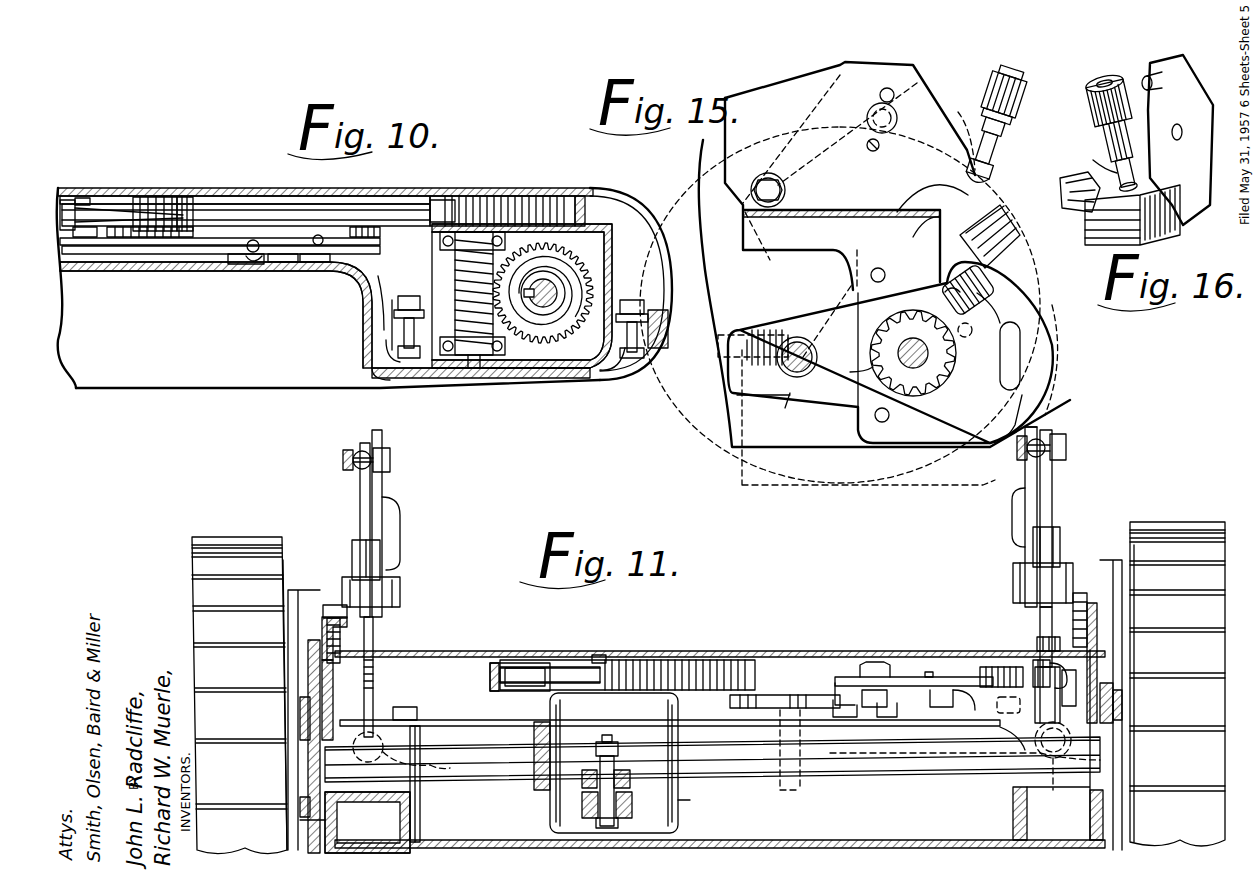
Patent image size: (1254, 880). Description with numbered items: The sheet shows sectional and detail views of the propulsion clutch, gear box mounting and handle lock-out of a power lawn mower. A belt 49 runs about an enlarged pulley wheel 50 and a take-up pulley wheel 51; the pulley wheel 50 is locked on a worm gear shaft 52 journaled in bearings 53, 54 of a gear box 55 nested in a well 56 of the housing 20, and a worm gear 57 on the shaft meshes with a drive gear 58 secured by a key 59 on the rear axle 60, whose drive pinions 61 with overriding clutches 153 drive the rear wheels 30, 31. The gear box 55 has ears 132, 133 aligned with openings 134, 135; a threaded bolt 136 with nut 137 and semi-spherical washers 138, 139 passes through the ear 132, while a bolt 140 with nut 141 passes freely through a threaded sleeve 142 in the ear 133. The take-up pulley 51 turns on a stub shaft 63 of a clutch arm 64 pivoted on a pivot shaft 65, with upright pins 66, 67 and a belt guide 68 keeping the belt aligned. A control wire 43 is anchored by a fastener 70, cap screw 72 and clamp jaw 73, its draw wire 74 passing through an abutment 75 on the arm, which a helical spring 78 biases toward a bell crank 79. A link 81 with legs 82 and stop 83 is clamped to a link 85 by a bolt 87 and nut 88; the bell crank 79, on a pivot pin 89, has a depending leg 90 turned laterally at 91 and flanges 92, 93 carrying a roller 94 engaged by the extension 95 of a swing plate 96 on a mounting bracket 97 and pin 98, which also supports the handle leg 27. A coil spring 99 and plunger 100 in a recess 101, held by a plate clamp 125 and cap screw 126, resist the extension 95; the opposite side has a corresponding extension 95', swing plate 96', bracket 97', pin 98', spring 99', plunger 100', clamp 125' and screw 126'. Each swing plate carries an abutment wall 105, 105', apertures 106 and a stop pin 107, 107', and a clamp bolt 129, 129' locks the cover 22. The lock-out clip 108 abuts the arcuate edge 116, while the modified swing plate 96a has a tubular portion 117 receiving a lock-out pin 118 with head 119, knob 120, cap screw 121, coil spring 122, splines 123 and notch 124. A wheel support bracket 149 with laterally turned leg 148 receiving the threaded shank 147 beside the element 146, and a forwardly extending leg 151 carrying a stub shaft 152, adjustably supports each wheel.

In FIG. 10, the housing 20 is at (376, 378).
In FIG. 15, the housing 20 is at (738, 436).
In FIG. 11, the housing 20 is at (702, 746).
In FIG. 10, the cover 22 is at (400, 190).
In FIG. 11, the cover 22 is at (740, 650).
In FIG. 11, the handle leg 27 is at (1040, 439).
In FIG. 15, the rear wheel 30 is at (1045, 350).
In FIG. 11, the rear wheel 30 is at (236, 537).
In FIG. 11, the rear wheel 31 is at (1168, 522).
In FIG. 10, the control wire 43 is at (255, 242).
In FIG. 10, the belt 49 is at (283, 212).
In FIG. 11, the belt 49 is at (543, 667).
In FIG. 10, the enlarged pulley wheel 50 is at (520, 194).
In FIG. 11, the enlarged pulley wheel 50 is at (570, 660).
In FIG. 10, the take-up pulley wheel 51 is at (112, 205).
In FIG. 10, the worm gear shaft 52 is at (462, 205).
In FIG. 11, the worm gear shaft 52 is at (606, 657).
In FIG. 10, the bearing 53 is at (440, 210).
In FIG. 10, the bearing 54 is at (474, 368).
In FIG. 10, the gear box 55 is at (592, 226).
In FIG. 11, the gear box 55 is at (633, 700).
In FIG. 10, the well 56 is at (584, 372).
In FIG. 11, the well 56 is at (724, 817).
In FIG. 10, the worm gear 57 is at (458, 270).
In FIG. 10, the drive gear 58 is at (582, 255).
In FIG. 10, the key 59 is at (521, 288).
In FIG. 10, the rear axle 60 is at (548, 300).
In FIG. 15, the rear axle 60 is at (910, 340).
In FIG. 11, the rear axle 60 is at (910, 762).
In FIG. 15, the drive pinion 61 is at (873, 367).
In FIG. 10, the stub shaft 63 is at (148, 196).
In FIG. 10, the clutch arm 64 is at (160, 246).
In FIG. 11, the clutch arm 64 is at (796, 695).
In FIG. 10, the pivot shaft 65 is at (360, 227).
In FIG. 11, the pivot shaft 65 is at (775, 738).
In FIG. 10, the upright pin 66 is at (82, 198).
In FIG. 10, the upright pin 67 is at (188, 198).
In FIG. 10, the belt guide 68 is at (592, 200).
In FIG. 11, the belt guide 68 is at (492, 675).
In FIG. 10, the fastener 70 is at (278, 262).
In FIG. 10, the cap screw 72 is at (296, 262).
In FIG. 10, the clamp jaw 73 is at (248, 262).
In FIG. 10, the draw wire 74 is at (252, 240).
In FIG. 10, the abutment 75 is at (216, 258).
In FIG. 11, the abutment 75 is at (852, 714).
In FIG. 10, the helical spring 78 is at (318, 246).
In FIG. 11, the bell crank 79 is at (1037, 652).
In FIG. 11, the link 81 is at (825, 690).
In FIG. 11, the legs 82 is at (896, 677).
In FIG. 11, the stop 83 is at (929, 672).
In FIG. 11, the link 85 is at (952, 677).
In FIG. 11, the bolt 87 is at (874, 662).
In FIG. 11, the nut 88 is at (880, 710).
In FIG. 11, the pivot pin 89 is at (1003, 666).
In FIG. 11, the depending leg 90 is at (968, 707).
In FIG. 11, the laterally turned portion 91 is at (935, 710).
In FIG. 11, the flange 92 is at (1080, 683).
In FIG. 11, the flange 93 is at (1106, 649).
In FIG. 11, the roller 94 is at (1115, 698).
In FIG. 11, the extension 95 is at (1058, 745).
In FIG. 15, the extension 95' is at (753, 312).
In FIG. 11, the swing plate 96 is at (1027, 547).
In FIG. 15, the swing plate 96' is at (832, 182).
In FIG. 11, the swing plate 96' is at (360, 583).
In FIG. 15, the swing plate 96a is at (917, 97).
In FIG. 11, the swing plate mounting bracket 97 is at (1087, 594).
In FIG. 15, the swing plate mounting bracket 97' is at (895, 198).
In FIG. 11, the swing plate mounting bracket 97' is at (319, 611).
In FIG. 11, the pin 98 is at (1020, 569).
In FIG. 15, the pin 98' is at (786, 173).
In FIG. 11, the pin 98' is at (394, 573).
In FIG. 11, the coil spring 99 is at (1112, 773).
In FIG. 15, the coil spring 99' is at (754, 331).
In FIG. 11, the coil spring 99' is at (447, 787).
In FIG. 11, the plunger 100 is at (993, 763).
In FIG. 15, the plunger 100' is at (761, 406).
In FIG. 11, the plunger 100' is at (670, 734).
In FIG. 11, the recess 101 is at (1073, 744).
In FIG. 11, the abutment wall 105 is at (995, 517).
In FIG. 11, the abutment wall 105' is at (422, 533).
In FIG. 15, the apertures 106 is at (880, 146).
In FIG. 15, the stop pin 107 is at (904, 121).
In FIG. 11, the stop pin 107 is at (1064, 448).
In FIG. 11, the stop pin 107' is at (393, 464).
In FIG. 11, the U-shaped clip 108 is at (1050, 545).
In FIG. 15, the arcuate edge 116 is at (942, 228).
In FIG. 16, the arcuate edge 116 is at (1090, 226).
In FIG. 15, the tubular portion 117 is at (996, 170).
In FIG. 16, the tubular portion 117 is at (1127, 135).
In FIG. 15, the lock-out pin 118 is at (1008, 130).
In FIG. 16, the lock-out pin 118 is at (1150, 166).
In FIG. 15, the enlarged head 119 is at (986, 202).
In FIG. 16, the enlarged head 119 is at (1108, 245).
In FIG. 15, the knob 120 is at (1018, 106).
In FIG. 16, the knob 120 is at (1130, 77).
In FIG. 15, the cap screw 121 is at (1008, 82).
In FIG. 15, the coil spring 122 is at (1002, 152).
In FIG. 15, the splines 123 is at (965, 118).
In FIG. 16, the splines 123 is at (1095, 160).
In FIG. 15, the notch 124 is at (992, 186).
In FIG. 11, the plate clamp 125 is at (965, 749).
In FIG. 11, the plate clamp 125' is at (391, 727).
In FIG. 11, the cap screw 126 is at (425, 765).
In FIG. 11, the cap screw 126' is at (985, 684).
In FIG. 11, the clamp bolt 129 is at (1134, 663).
In FIG. 11, the clamp bolt 129' is at (279, 638).
In FIG. 10, the ear 132 is at (392, 326).
In FIG. 10, the ear 133 is at (648, 328).
In FIG. 11, the ear 133 is at (618, 770).
In FIG. 10, the opening 134 is at (391, 357).
In FIG. 10, the opening 135 is at (646, 340).
In FIG. 11, the opening 135 is at (584, 796).
In FIG. 10, the threaded bolt 136 is at (410, 360).
In FIG. 10, the nut 137 is at (386, 292).
In FIG. 10, the washer 138 is at (390, 308).
In FIG. 10, the washer 139 is at (393, 341).
In FIG. 10, the bolt 140 is at (632, 358).
In FIG. 11, the bolt 140 is at (594, 820).
In FIG. 10, the nut 141 is at (634, 300).
In FIG. 11, the nut 141 is at (612, 748).
In FIG. 10, the threaded sleeve 142 is at (648, 312).
In FIG. 11, the threaded sleeve 142 is at (588, 768).
In FIG. 15, the knurled nut 146 is at (998, 272).
In FIG. 15, the threaded shank 147 is at (958, 298).
In FIG. 15, the laterally turned leg 148 is at (1010, 287).
In FIG. 15, the wheel support bracket 149 is at (920, 407).
In FIG. 11, the wheel support bracket 149 is at (300, 826).
In FIG. 15, the forwardly extending leg 151 is at (790, 395).
In FIG. 15, the stub shaft 152 is at (803, 373).
In FIG. 15, the overriding clutch 153 is at (957, 393).